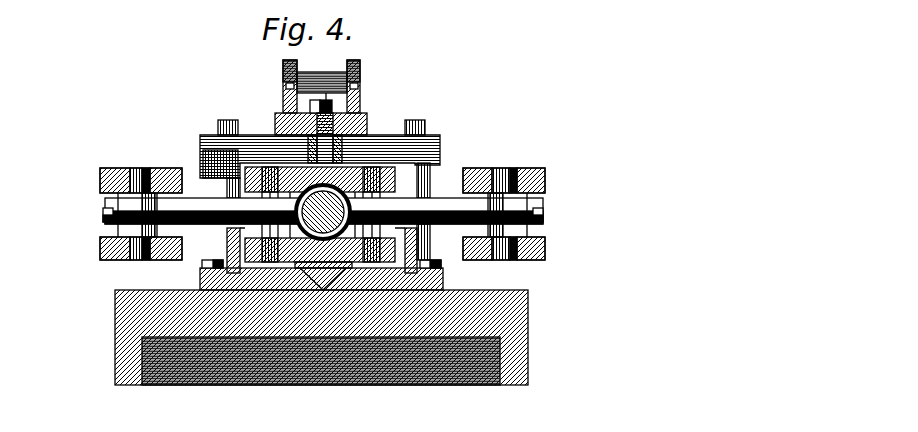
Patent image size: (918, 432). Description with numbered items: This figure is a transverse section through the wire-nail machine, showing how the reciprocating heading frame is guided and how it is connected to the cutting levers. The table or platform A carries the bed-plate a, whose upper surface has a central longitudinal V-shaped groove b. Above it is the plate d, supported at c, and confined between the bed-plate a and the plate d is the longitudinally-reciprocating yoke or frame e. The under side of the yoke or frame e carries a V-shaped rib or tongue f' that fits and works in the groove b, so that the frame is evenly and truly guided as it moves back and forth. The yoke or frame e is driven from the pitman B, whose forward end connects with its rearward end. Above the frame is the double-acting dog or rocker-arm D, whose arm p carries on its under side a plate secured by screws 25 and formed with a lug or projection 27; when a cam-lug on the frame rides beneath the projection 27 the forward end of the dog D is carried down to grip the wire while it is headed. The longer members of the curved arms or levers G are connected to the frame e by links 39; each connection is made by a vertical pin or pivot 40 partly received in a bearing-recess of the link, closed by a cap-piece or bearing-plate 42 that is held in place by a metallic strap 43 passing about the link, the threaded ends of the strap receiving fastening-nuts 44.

The screws 25 is at (317, 100).
The lug or projection 27 is at (367, 133).
The link 39 is at (437, 205).
The vertical pins or pivots 40 is at (520, 168).
The cap-pieces or bearing-plates 42 is at (512, 228).
The metallic straps 43 is at (420, 228).
The fastening-nuts 44 is at (545, 212).
The table or platform A is at (528, 318).
The pitman B is at (333, 204).
The double-acting dog or rocker-arm D is at (357, 63).
The curved arms or levers G is at (545, 170).
The bed-plate a is at (443, 284).
The central longitudinal groove b is at (345, 290).
The support c is at (435, 165).
The plate d is at (412, 148).
The longitudinally-reciprocating yoke or frame e is at (293, 178).
The arm p is at (285, 117).
The V-shaped rib or tongue f' is at (298, 342).